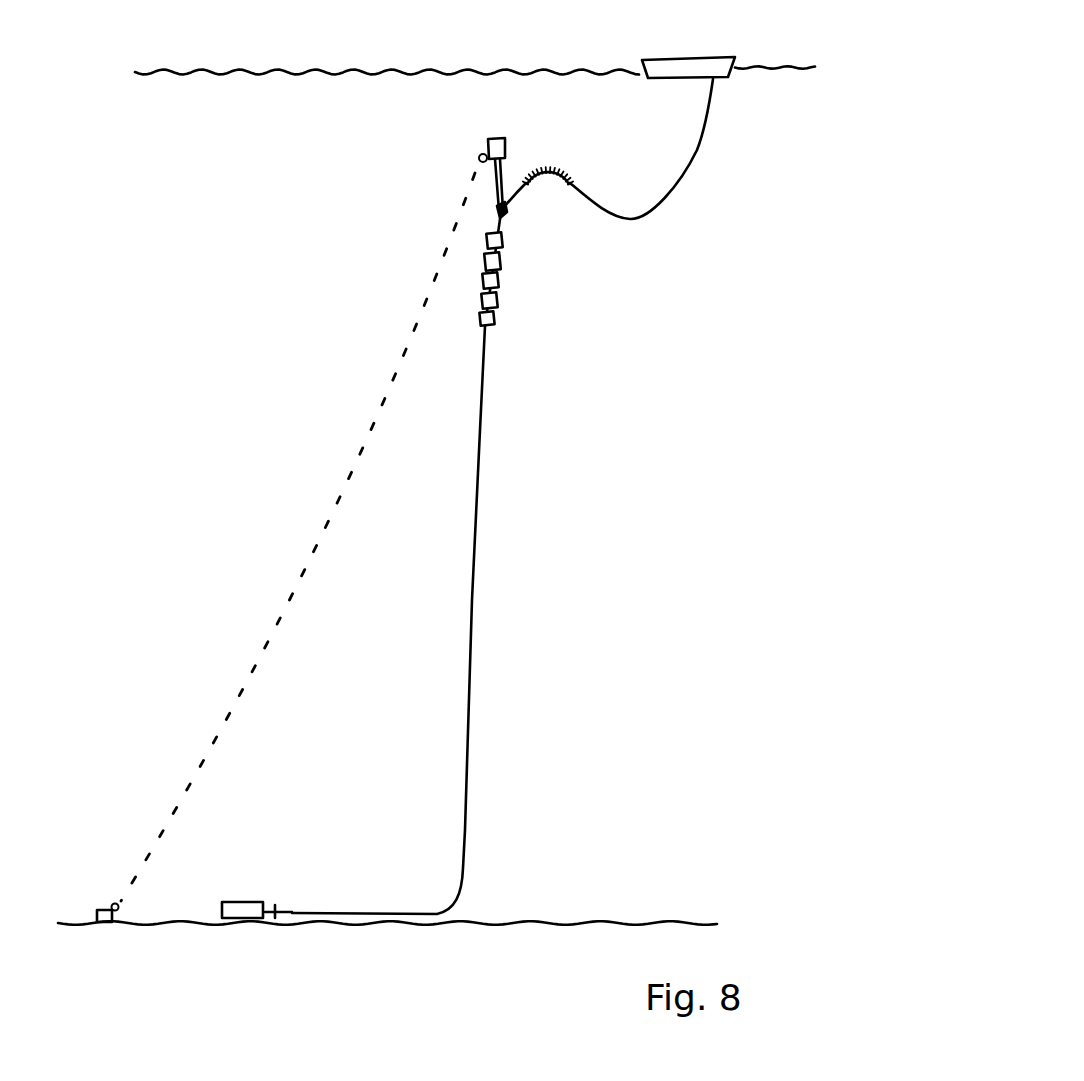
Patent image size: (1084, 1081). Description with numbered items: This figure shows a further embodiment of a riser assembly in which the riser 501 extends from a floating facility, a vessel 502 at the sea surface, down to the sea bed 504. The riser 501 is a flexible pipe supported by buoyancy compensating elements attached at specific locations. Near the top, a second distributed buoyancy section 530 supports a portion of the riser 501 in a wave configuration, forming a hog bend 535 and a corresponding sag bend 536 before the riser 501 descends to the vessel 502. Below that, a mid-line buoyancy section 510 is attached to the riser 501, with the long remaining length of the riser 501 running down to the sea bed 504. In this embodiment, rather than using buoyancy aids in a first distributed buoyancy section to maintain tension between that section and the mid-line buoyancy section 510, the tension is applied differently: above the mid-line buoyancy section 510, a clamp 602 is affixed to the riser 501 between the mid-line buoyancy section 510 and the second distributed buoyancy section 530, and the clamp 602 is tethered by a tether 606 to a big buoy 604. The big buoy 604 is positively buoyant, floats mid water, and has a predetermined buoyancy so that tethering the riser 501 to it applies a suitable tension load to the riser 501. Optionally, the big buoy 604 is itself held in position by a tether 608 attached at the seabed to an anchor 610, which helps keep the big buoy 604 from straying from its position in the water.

The riser 501 is at (396, 622).
The vessel 502 is at (715, 49).
The sea bed 504 is at (387, 903).
The mid-line buoyancy section 510 is at (475, 237).
The second distributed buoyancy section 530 is at (590, 161).
The hog bend 535 is at (549, 188).
The sag bend 536 is at (645, 230).
The clamp 602 is at (516, 219).
The big buoy 604 is at (446, 149).
The tether 606 is at (430, 191).
The tether 608 is at (298, 537).
The anchor 610 is at (105, 908).